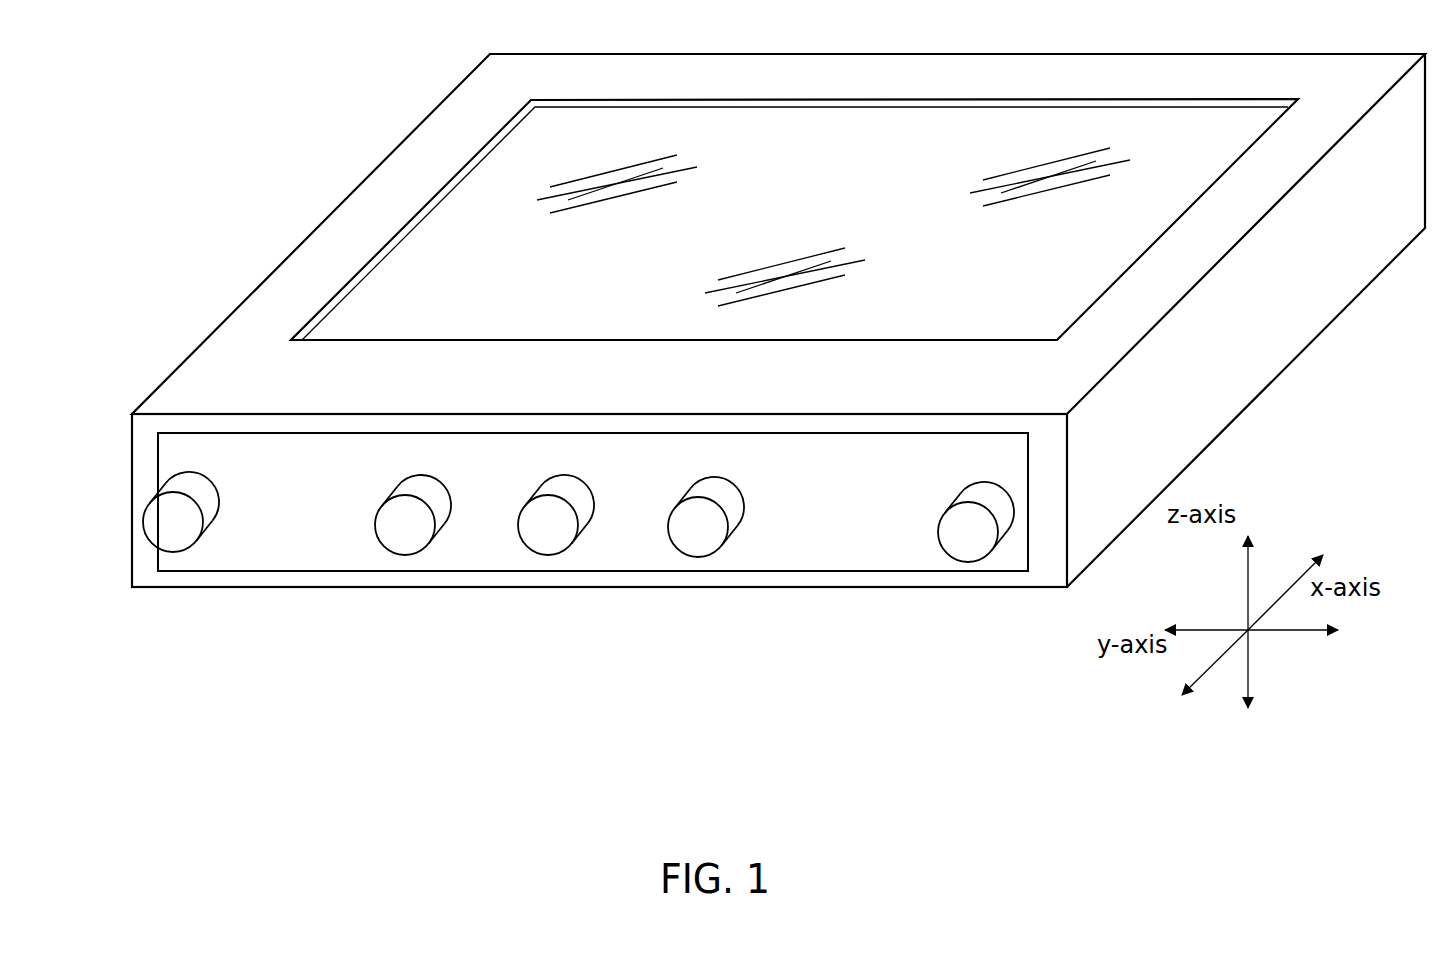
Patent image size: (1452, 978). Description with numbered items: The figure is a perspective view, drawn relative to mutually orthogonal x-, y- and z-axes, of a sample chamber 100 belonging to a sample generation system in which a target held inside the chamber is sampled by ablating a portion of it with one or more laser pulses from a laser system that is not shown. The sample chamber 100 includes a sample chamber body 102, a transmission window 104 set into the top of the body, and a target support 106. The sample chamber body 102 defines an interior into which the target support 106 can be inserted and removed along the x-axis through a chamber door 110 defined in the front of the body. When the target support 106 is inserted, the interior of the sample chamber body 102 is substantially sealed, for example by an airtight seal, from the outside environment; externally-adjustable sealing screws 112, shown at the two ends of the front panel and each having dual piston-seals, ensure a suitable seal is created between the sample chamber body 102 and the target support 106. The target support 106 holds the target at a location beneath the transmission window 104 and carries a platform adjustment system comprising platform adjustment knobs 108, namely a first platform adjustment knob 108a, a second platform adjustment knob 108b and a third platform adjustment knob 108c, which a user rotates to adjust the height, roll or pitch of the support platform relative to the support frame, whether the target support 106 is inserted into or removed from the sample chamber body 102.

The sample chamber 100 is at (238, 81).
The sample chamber body 102 is at (310, 278).
The transmission window 104 is at (580, 136).
The target support 106 is at (292, 548).
The platform adjustment knobs 108 is at (523, 599).
The first platform adjustment knob 108a is at (383, 547).
The second platform adjustment knob 108b is at (525, 547).
The third platform adjustment knob 108c is at (677, 555).
The chamber door 110 is at (788, 560).
The sealing screws 112 is at (148, 538).